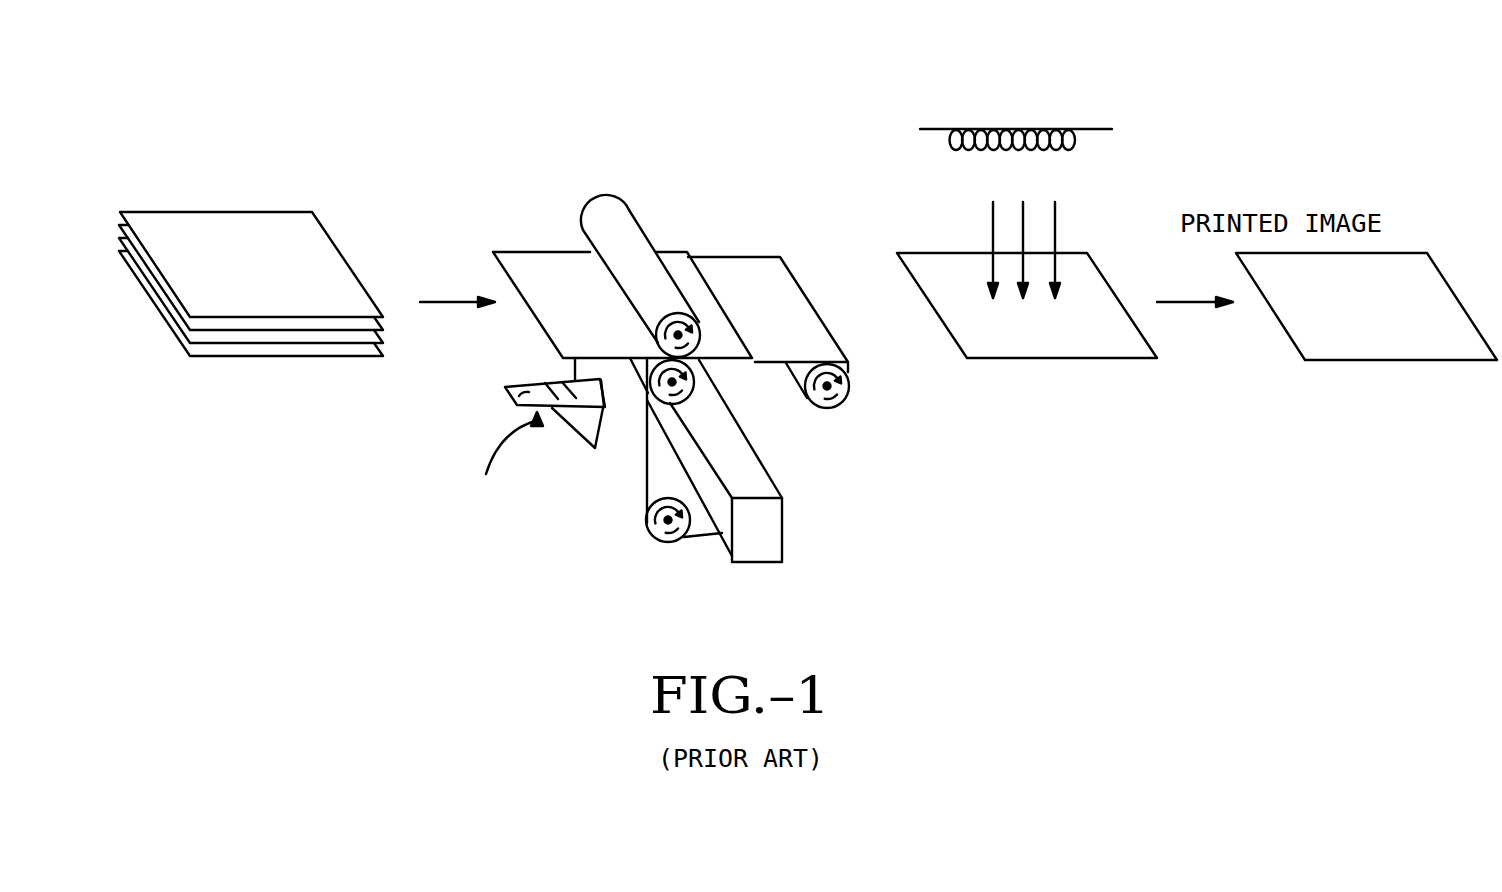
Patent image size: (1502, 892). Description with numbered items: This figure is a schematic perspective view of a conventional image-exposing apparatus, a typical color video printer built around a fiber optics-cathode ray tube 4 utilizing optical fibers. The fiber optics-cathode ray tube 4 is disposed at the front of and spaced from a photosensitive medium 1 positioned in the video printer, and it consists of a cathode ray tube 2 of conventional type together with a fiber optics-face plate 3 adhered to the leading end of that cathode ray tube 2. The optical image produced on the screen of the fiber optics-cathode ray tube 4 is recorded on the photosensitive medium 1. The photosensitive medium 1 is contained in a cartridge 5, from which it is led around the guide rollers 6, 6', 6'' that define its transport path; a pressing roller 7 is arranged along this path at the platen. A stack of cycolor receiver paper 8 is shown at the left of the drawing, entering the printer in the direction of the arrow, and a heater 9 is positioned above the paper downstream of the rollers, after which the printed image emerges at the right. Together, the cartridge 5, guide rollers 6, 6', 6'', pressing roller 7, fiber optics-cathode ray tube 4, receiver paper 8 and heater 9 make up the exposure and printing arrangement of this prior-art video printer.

The photosensitive medium 1 is at (638, 460).
The cathode ray tube 2 is at (514, 401).
The fiber optics-face plate 3 is at (602, 414).
The fiber optics-cathode ray tube 4 is at (500, 452).
The cartridge 5 is at (747, 534).
The guide roller 6 is at (660, 562).
The guide roller 6' is at (726, 411).
The guide roller 6'' is at (851, 403).
The pressing roller 7 is at (607, 227).
The cycolor receiver paper 8 is at (238, 252).
The heater 9 is at (1008, 104).